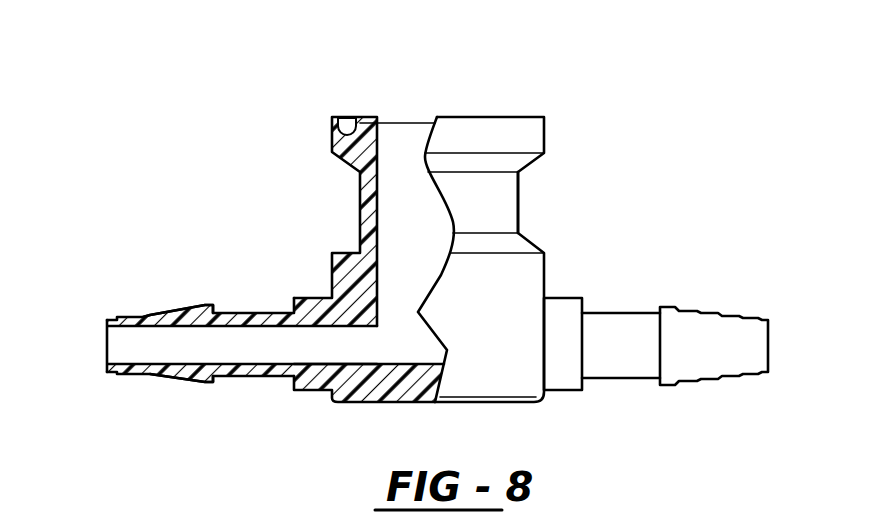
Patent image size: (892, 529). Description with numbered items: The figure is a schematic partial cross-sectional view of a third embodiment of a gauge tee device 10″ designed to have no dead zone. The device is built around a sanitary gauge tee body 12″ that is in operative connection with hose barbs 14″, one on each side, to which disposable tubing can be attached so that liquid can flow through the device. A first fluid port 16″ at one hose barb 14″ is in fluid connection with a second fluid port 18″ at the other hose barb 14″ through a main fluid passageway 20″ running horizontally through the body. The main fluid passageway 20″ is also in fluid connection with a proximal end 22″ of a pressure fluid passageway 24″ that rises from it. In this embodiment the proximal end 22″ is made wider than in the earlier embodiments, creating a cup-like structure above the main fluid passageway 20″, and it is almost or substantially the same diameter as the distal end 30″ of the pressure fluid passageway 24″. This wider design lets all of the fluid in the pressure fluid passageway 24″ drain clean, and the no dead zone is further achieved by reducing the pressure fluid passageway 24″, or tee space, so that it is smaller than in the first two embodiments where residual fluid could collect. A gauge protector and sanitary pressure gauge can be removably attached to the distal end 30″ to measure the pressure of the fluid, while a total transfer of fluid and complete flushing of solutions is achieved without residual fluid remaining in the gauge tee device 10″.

The gauge tee device 10 is at (752, 83).
The sanitary gauge tee body 12 is at (519, 208).
The hose barbs 14 is at (178, 378).
The first fluid port 16 is at (105, 343).
The second fluid port 18 is at (779, 330).
The main fluid passageway 20 is at (347, 342).
The proximal end 22 is at (381, 298).
The pressure fluid passageway 24 is at (412, 210).
The distal end 30 is at (547, 117).